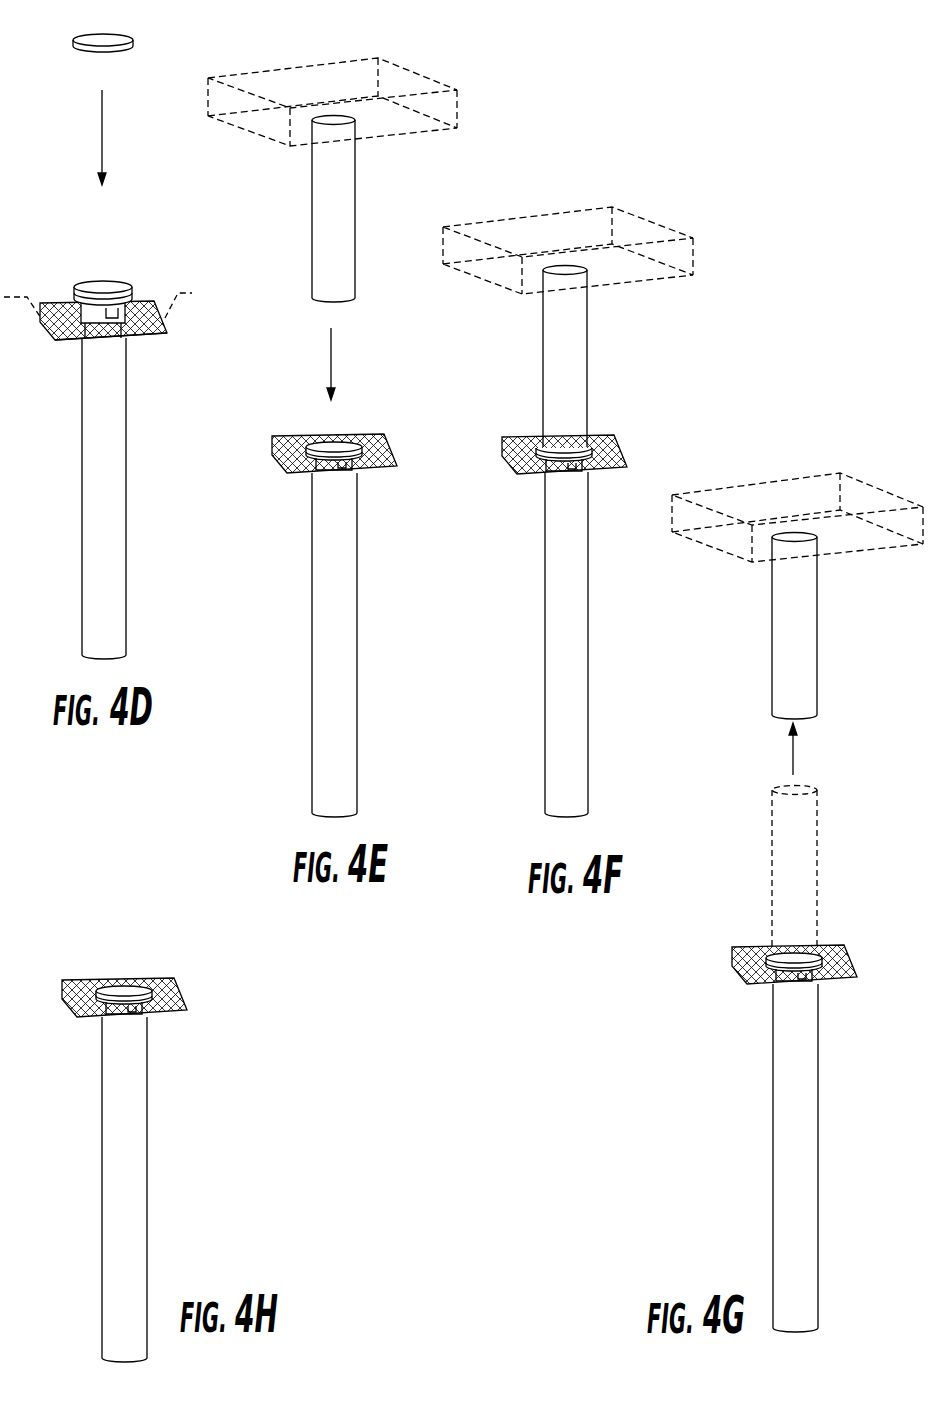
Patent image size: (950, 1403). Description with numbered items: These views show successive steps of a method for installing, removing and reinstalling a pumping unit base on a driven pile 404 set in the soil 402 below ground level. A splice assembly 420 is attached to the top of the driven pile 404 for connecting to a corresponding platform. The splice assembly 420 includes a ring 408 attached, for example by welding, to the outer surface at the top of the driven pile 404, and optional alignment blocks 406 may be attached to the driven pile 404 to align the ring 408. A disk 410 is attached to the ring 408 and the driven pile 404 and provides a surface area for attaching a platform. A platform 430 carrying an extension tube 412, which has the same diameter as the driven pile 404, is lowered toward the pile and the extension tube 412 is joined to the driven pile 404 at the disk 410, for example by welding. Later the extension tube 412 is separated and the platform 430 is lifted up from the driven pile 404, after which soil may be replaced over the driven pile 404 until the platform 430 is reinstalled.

In FIG. 4D, the soil 402 is at (53, 327).
In FIG. 4E, the soil 402 is at (288, 462).
In FIG. 4F, the soil 402 is at (510, 462).
In FIG. 4G, the soil 402 is at (794, 964).
In FIG. 4H, the soil 402 is at (152, 965).
In FIG. 4D, the driven pile 404 is at (90, 553).
In FIG. 4E, the driven pile 404 is at (318, 685).
In FIG. 4F, the driven pile 404 is at (552, 685).
In FIG. 4G, the driven pile 404 is at (783, 1103).
In FIG. 4H, the driven pile 404 is at (108, 1168).
In FIG. 4D, the alignment blocks 406 is at (133, 338).
In FIG. 4D, the ring 408 is at (130, 303).
In FIG. 4D, the disk 410 is at (100, 40).
In FIG. 4E, the extension tube 412 is at (342, 217).
In FIG. 4F, the extension tube 412 is at (573, 318).
In FIG. 4G, the extension tube 412 is at (808, 602).
In FIG. 4D, the splice assembly 420 is at (114, 298).
In FIG. 4E, the splice assembly 420 is at (337, 457).
In FIG. 4F, the splice assembly 420 is at (554, 477).
In FIG. 4G, the splice assembly 420 is at (822, 920).
In FIG. 4H, the splice assembly 420 is at (150, 968).
In FIG. 4E, the platform 430 is at (415, 45).
In FIG. 4F, the platform 430 is at (652, 210).
In FIG. 4G, the platform 430 is at (810, 458).